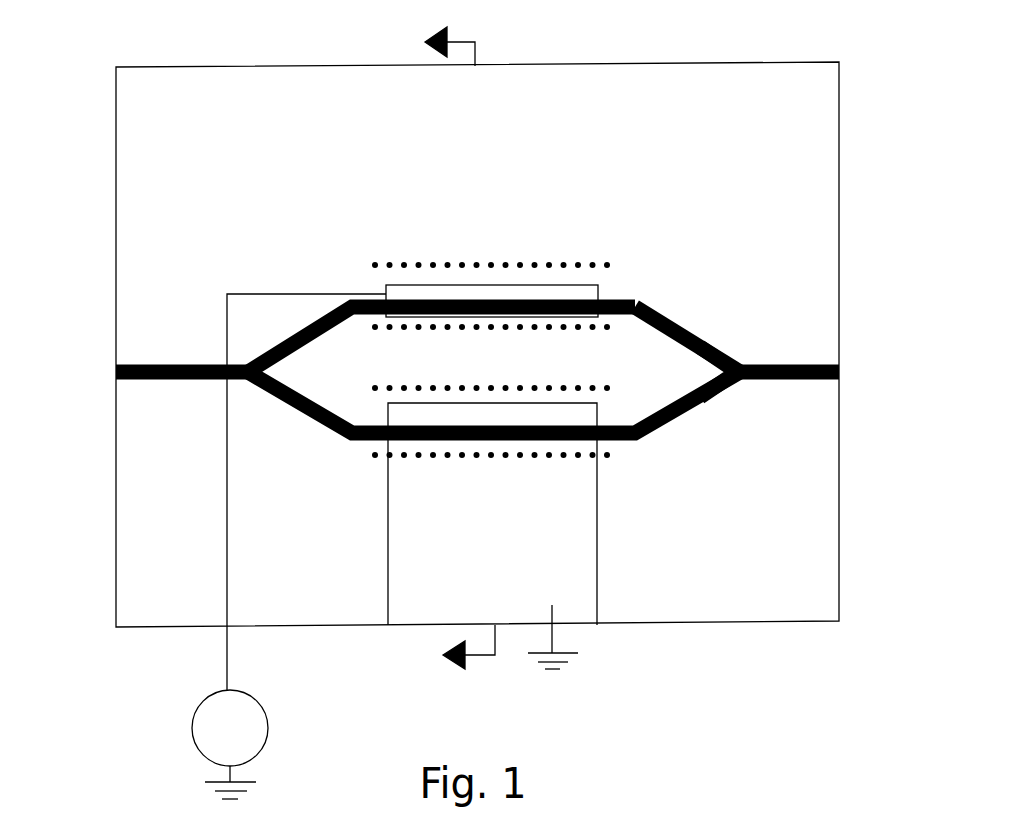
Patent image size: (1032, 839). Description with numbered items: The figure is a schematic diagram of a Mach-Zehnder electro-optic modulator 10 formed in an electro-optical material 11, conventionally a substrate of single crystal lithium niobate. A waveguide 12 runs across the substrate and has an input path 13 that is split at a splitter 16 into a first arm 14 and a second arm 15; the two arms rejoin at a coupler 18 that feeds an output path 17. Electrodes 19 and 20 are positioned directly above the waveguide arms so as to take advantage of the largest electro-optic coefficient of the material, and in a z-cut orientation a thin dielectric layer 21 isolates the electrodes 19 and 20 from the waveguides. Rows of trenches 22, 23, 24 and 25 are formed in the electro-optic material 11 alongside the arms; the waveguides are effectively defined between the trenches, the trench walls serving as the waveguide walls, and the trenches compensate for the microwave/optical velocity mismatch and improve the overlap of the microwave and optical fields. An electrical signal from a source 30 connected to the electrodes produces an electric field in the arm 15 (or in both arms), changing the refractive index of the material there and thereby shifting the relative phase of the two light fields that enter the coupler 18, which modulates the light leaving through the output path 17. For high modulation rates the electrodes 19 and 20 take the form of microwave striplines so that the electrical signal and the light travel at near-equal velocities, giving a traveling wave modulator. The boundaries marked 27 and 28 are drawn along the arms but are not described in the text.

The Mach-Zehnder modulator 10 is at (488, 407).
The electro-optical material 11 is at (130, 122).
The waveguide 12 is at (708, 309).
The input path 13 is at (165, 364).
The first arm 14 is at (330, 435).
The second arm 15 is at (615, 294).
The splitter 16 is at (250, 362).
The output path 17 is at (797, 373).
The coupler 18 is at (740, 357).
The electrode 19 is at (597, 578).
The electrode 20 is at (425, 290).
The dielectric layer 21 is at (815, 600).
The trench 22 is at (605, 460).
The trench 23 is at (370, 385).
The trench 24 is at (582, 335).
The trench 25 is at (494, 263).
The lower waveguide boundary 27 is at (598, 442).
The upper waveguide boundary 28 is at (373, 277).
The source 30 is at (270, 718).